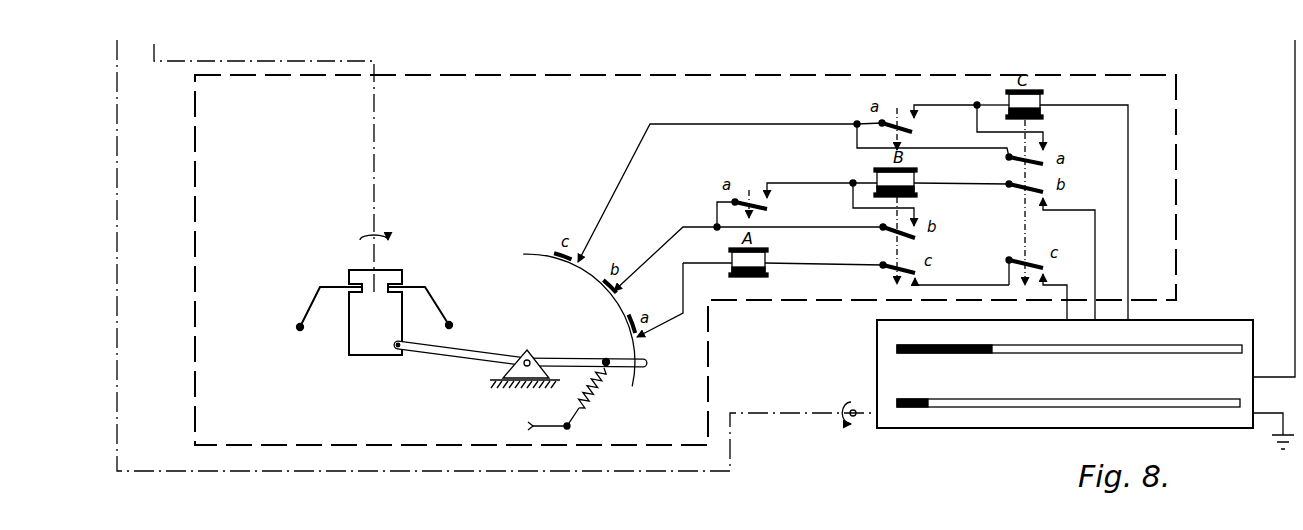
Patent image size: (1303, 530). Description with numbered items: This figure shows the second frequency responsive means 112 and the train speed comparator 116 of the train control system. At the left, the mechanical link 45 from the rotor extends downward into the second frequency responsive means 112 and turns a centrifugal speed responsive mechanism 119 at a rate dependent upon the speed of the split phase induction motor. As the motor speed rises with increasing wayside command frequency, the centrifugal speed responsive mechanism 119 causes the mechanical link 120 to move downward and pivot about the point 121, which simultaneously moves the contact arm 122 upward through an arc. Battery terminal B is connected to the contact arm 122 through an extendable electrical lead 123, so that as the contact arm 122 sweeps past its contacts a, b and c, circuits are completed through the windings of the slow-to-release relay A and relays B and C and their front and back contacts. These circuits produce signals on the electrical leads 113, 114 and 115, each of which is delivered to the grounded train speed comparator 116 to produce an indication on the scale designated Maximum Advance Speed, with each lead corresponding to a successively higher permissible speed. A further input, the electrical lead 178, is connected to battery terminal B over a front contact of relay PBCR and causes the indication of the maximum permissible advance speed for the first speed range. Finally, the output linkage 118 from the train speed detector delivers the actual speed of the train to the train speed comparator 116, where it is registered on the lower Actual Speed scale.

The mechanical link 45 is at (154, 46).
The output linkage 118 is at (117, 85).
The second frequency responsive means 112 is at (457, 65).
The centrifugal speed responsive mechanism 119 is at (410, 277).
The mechanical link 120 is at (483, 352).
The pivot point 121 is at (532, 352).
The contact arm 122 is at (623, 348).
The extendable electrical lead 123 is at (593, 410).
The electrical lead 113 is at (1072, 302).
The electrical lead 114 is at (1100, 302).
The electrical lead 115 is at (1130, 285).
The train speed comparator 116 is at (1237, 310).
The electrical lead 178 is at (1295, 66).